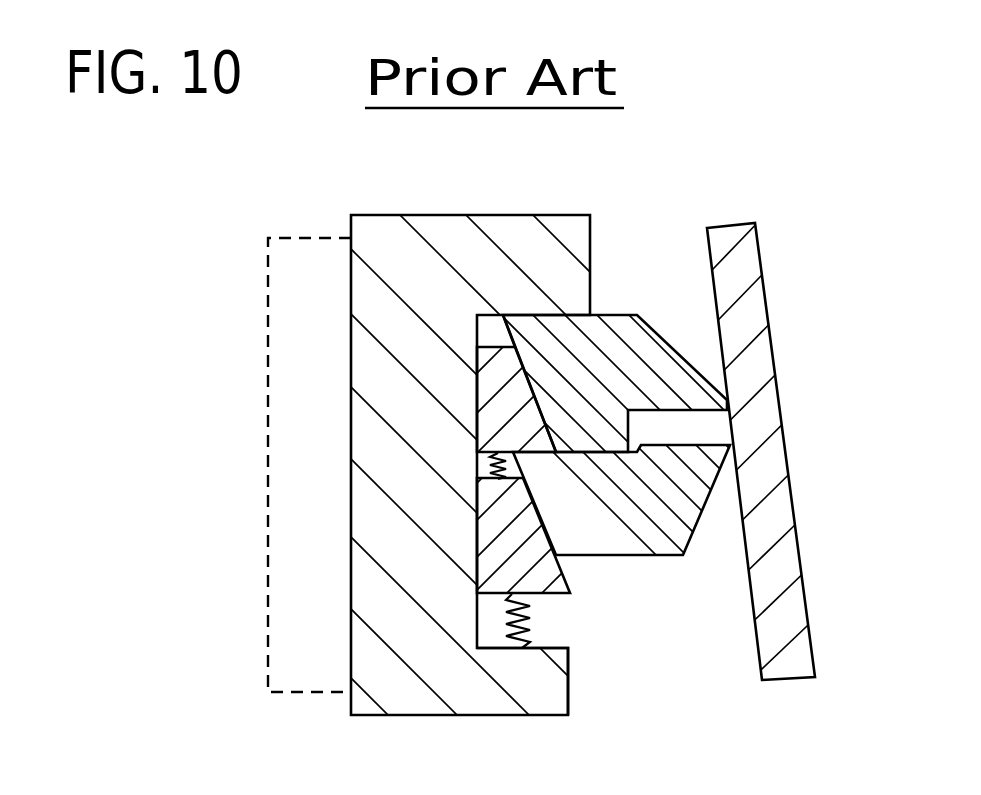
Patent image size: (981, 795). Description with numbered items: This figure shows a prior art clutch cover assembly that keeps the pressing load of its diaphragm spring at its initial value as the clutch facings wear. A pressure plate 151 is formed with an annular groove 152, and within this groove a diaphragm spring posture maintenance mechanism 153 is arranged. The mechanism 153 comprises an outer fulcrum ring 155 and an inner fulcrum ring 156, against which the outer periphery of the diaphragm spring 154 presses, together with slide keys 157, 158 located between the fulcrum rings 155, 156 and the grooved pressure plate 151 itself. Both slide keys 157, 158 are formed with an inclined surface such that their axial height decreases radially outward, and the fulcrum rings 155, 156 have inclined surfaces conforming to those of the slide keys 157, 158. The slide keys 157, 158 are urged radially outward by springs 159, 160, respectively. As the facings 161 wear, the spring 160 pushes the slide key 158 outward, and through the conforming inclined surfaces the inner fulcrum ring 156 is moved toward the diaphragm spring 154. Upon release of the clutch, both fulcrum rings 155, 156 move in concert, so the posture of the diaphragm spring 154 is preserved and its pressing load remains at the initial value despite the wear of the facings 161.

The pressure plate 151 is at (458, 214).
The annular groove 152 is at (557, 647).
The diaphragm spring posture maintenance mechanism 153 is at (632, 238).
The diaphragm spring 154 is at (747, 312).
The outer fulcrum ring 155 is at (663, 333).
The inner fulcrum ring 156 is at (661, 548).
The slide key 157 is at (493, 370).
The slide key 158 is at (508, 549).
The spring 159 is at (482, 466).
The spring 160 is at (511, 647).
The facings 161 is at (290, 693).